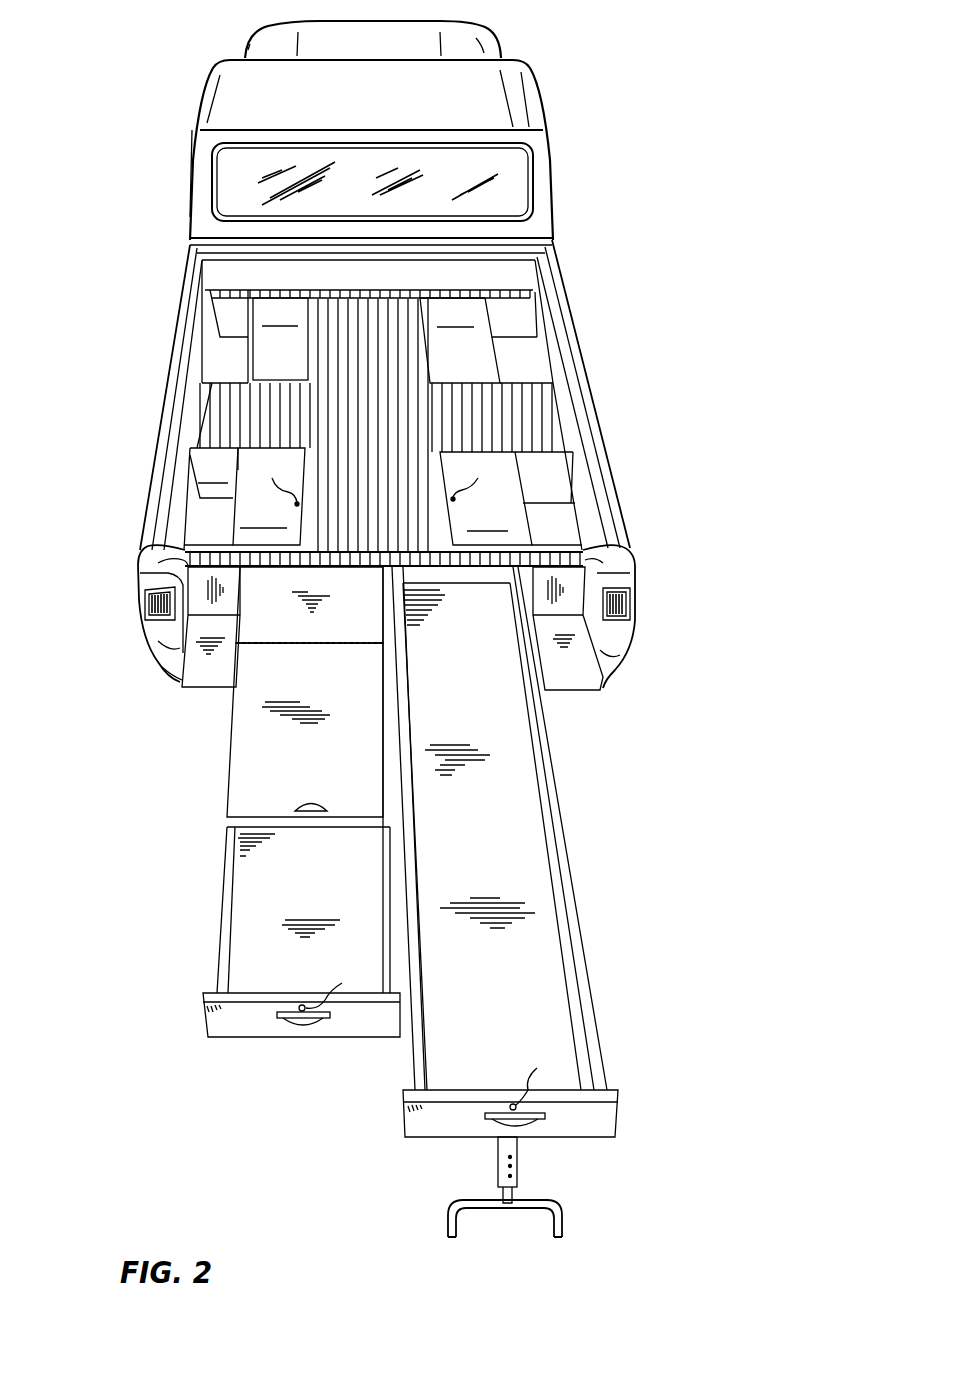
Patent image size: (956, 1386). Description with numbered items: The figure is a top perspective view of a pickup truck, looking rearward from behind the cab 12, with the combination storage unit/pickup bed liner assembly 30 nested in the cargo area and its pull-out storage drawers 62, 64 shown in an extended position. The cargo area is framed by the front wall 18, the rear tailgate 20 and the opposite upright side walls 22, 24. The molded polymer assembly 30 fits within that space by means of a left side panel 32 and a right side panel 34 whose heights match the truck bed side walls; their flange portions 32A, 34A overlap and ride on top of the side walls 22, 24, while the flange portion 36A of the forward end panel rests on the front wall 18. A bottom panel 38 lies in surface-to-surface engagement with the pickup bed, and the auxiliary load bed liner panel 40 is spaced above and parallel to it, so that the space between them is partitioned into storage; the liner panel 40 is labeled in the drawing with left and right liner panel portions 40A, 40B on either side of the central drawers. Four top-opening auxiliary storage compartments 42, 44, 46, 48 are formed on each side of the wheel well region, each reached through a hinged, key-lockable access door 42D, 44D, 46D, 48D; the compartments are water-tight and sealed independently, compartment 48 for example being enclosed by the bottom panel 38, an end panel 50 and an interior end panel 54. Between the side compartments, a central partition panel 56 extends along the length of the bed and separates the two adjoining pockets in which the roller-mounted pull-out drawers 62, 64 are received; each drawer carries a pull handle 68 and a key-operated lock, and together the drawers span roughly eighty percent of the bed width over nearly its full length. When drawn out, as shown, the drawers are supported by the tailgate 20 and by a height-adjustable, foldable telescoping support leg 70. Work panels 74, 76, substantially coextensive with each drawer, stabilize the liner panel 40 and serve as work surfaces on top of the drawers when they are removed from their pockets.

The cab 12 is at (541, 216).
The front wall 18 is at (235, 238).
The rear tailgate 20 is at (590, 680).
The side wall 22 is at (160, 395).
The side wall 24 is at (603, 418).
The combination storage unit/pickup bed liner assembly 30 is at (627, 378).
The left side panel 32 is at (182, 458).
The flange portion 32A is at (190, 310).
The right side panel 34 is at (590, 480).
The flange portion 34A is at (552, 292).
The flange portion 36A is at (318, 253).
The bottom panel 38 is at (207, 538).
The auxiliary load bed liner panel 40 is at (368, 550).
The left floor section 40A is at (208, 427).
The right floor section 40B is at (555, 437).
The auxiliary storage compartment 42 is at (222, 357).
The hinged access door 42D is at (280, 339).
The auxiliary storage compartment 44 is at (522, 357).
The hinged access door 44D is at (460, 340).
The auxiliary storage compartment 46 is at (560, 526).
The hinged access door 46D is at (486, 498).
The auxiliary storage compartment 48 is at (220, 510).
The hinged access door 48D is at (269, 496).
The end panel 50 is at (200, 607).
The interior end panel 54 is at (211, 496).
The central partition panel 56 is at (387, 603).
The pull-out drawer 62 is at (220, 903).
The pull-out drawer 64 is at (583, 908).
The pull handle 68 is at (308, 1030).
The support leg 70 is at (520, 1160).
The work panel 74 is at (252, 757).
The work panel 76 is at (483, 584).